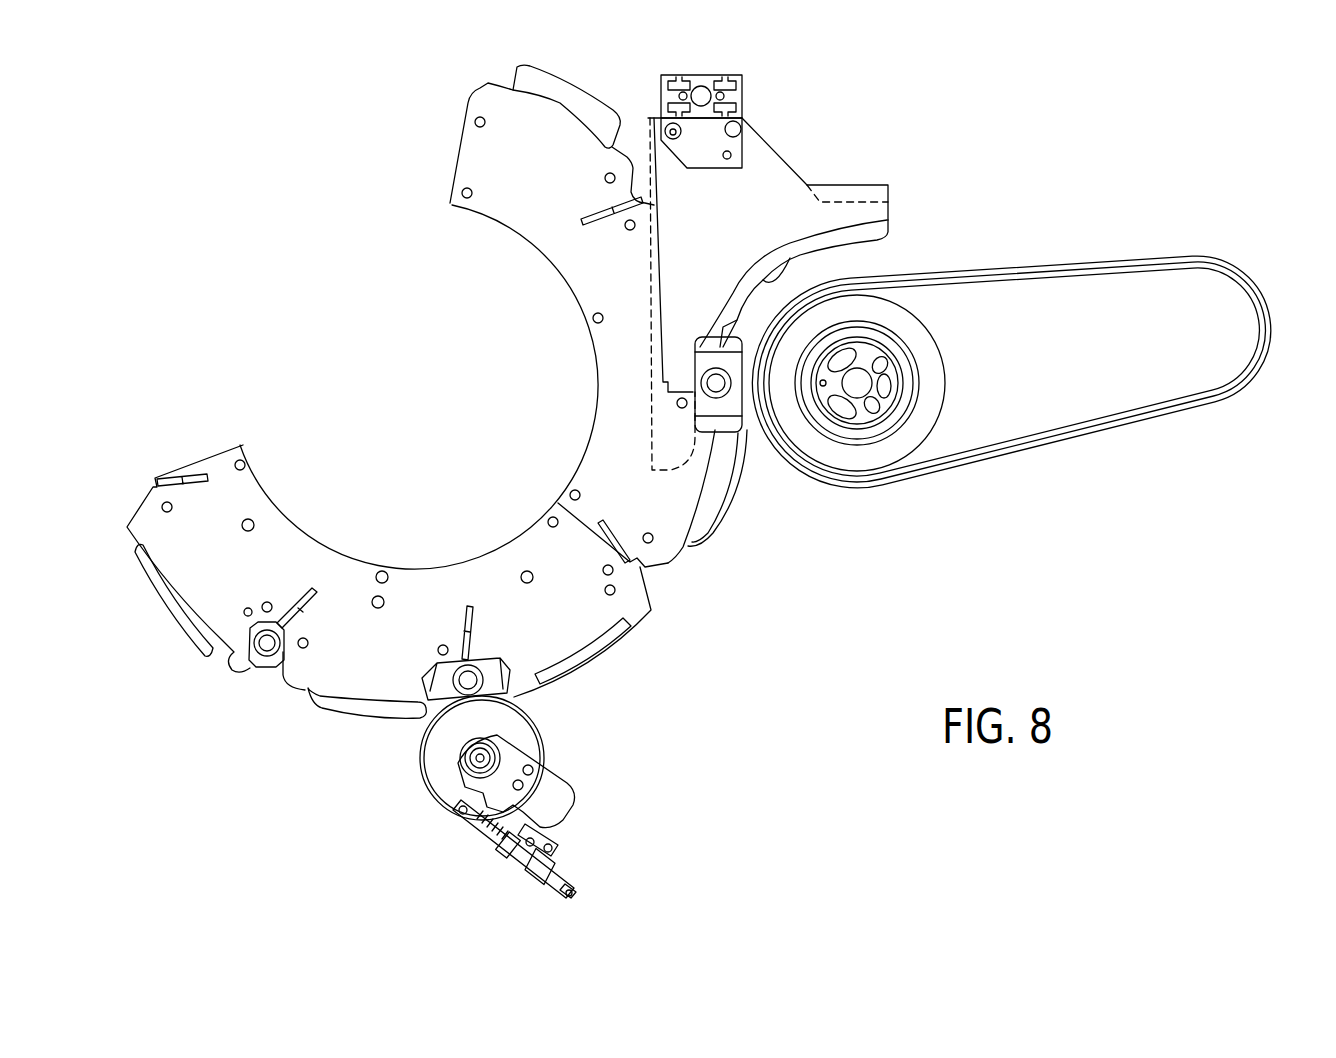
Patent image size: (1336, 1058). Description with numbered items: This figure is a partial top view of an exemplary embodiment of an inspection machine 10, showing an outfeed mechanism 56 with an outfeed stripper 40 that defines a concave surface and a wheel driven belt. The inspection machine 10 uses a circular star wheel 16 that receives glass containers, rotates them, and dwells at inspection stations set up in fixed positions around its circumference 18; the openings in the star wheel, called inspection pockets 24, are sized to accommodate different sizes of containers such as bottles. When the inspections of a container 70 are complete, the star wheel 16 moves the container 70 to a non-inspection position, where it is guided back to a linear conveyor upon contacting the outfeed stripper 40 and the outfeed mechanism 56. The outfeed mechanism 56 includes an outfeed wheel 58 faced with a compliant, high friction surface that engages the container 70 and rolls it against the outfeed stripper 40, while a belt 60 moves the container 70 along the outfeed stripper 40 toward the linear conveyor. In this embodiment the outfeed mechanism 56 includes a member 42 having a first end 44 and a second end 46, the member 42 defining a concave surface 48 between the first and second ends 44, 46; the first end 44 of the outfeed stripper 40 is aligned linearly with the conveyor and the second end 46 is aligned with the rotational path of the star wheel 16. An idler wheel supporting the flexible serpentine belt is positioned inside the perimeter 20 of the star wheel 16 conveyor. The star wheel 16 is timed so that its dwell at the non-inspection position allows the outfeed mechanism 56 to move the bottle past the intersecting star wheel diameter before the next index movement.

The inspection machine 10 is at (1000, 626).
The star wheel 16 is at (568, 638).
The circumference 18 is at (645, 610).
The perimeter 20 is at (297, 680).
The inspection pockets 24 is at (642, 160).
The outfeed stripper 40 is at (810, 162).
The member 42 is at (888, 236).
The first end 44 is at (663, 372).
The second end 46 is at (888, 199).
The concave surface 48 is at (790, 256).
The outfeed mechanism 56 is at (812, 512).
The outfeed wheel 58 is at (935, 360).
The belt 60 is at (1067, 430).
The container 70 is at (738, 428).